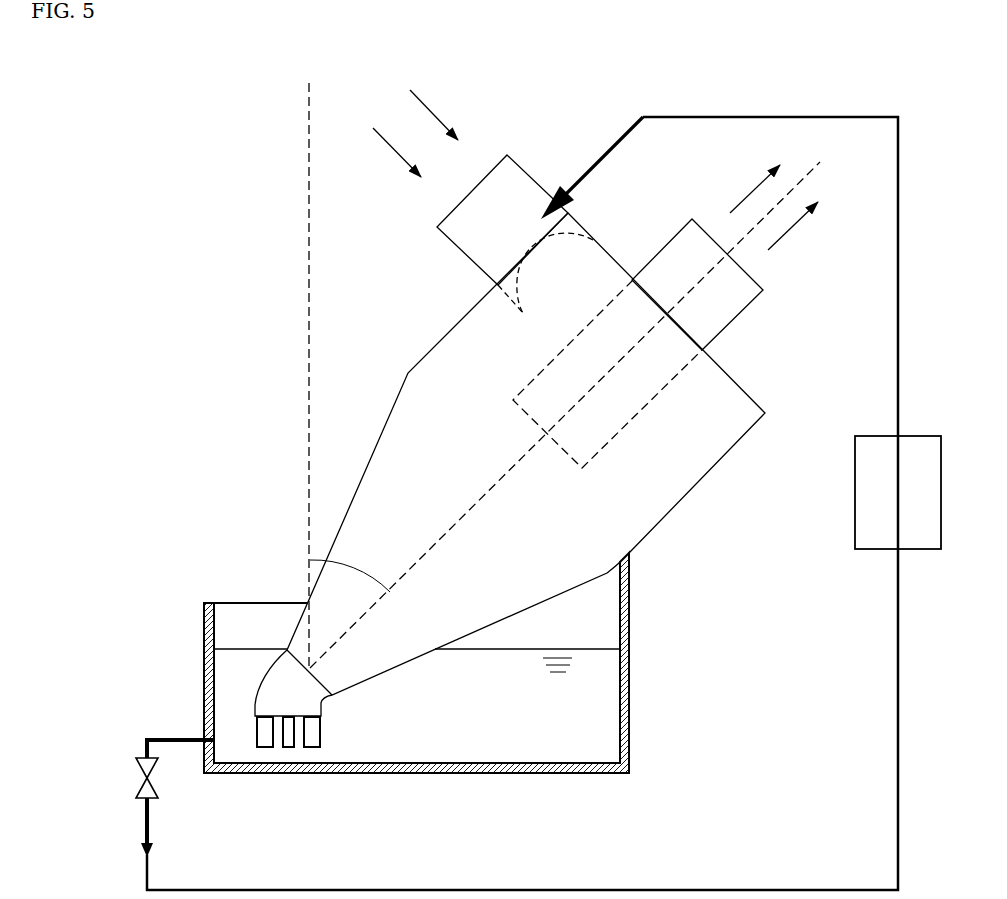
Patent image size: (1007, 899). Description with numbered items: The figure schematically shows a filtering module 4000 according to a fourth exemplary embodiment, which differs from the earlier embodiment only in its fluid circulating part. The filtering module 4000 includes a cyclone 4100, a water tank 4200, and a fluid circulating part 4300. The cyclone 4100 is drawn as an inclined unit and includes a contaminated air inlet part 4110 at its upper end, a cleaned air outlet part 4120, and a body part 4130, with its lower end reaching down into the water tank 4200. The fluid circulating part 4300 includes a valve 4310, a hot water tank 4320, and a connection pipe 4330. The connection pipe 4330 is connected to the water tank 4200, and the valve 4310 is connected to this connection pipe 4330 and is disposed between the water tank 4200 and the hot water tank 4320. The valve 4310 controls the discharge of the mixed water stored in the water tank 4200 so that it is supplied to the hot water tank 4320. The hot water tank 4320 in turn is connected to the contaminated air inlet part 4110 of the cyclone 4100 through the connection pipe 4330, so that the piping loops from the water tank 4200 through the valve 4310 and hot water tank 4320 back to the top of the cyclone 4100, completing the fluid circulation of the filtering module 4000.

The filtering module 4000 is at (239, 64).
The cyclone 4100 is at (733, 498).
The contaminated air inlet part 4110 is at (518, 195).
The cleaned air outlet part 4120 is at (687, 243).
The body part 4130 is at (774, 366).
The water tank 4200 is at (658, 734).
The fluid circulating part 4300 is at (127, 744).
The valve 4310 is at (136, 787).
The hot water tank 4320 is at (855, 492).
The connection pipe 4330 is at (158, 738).